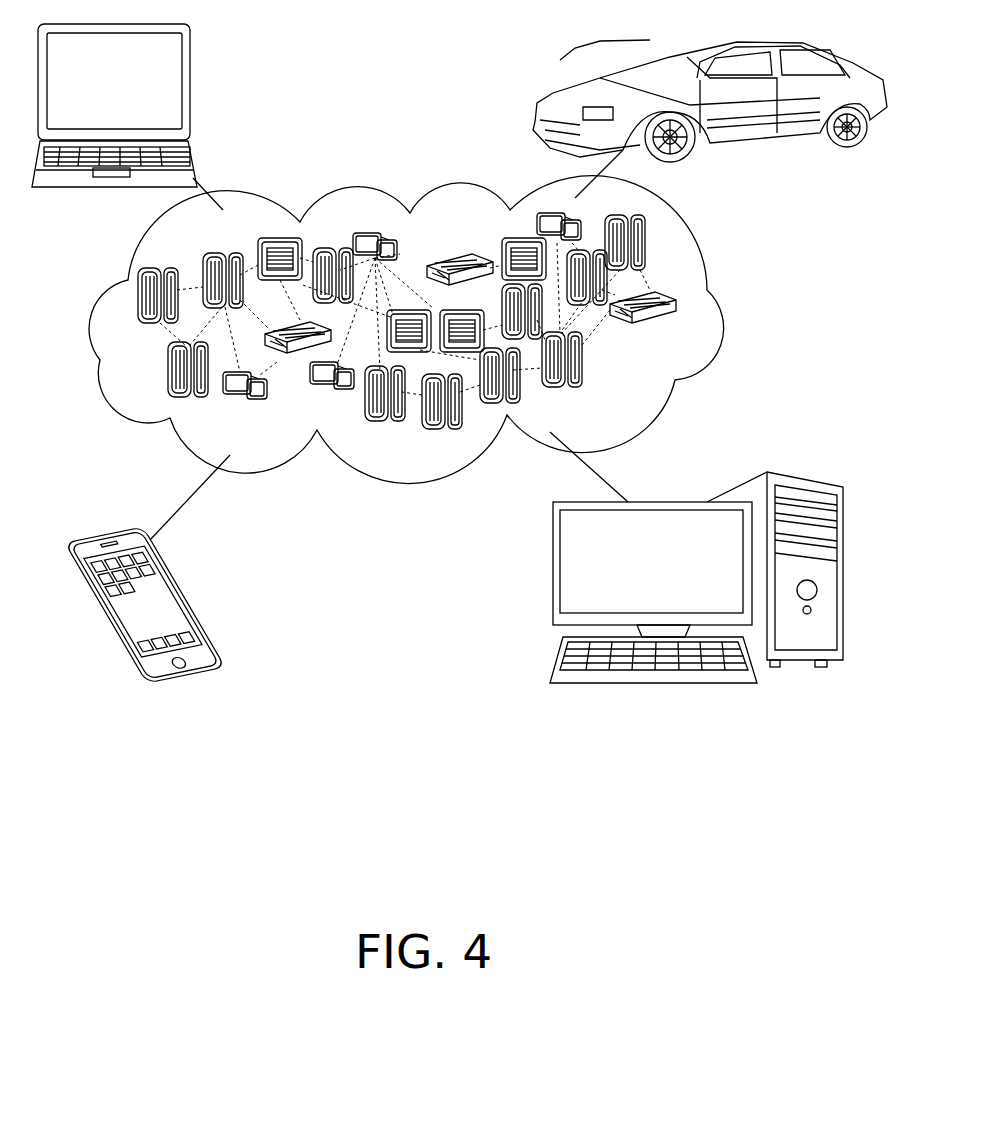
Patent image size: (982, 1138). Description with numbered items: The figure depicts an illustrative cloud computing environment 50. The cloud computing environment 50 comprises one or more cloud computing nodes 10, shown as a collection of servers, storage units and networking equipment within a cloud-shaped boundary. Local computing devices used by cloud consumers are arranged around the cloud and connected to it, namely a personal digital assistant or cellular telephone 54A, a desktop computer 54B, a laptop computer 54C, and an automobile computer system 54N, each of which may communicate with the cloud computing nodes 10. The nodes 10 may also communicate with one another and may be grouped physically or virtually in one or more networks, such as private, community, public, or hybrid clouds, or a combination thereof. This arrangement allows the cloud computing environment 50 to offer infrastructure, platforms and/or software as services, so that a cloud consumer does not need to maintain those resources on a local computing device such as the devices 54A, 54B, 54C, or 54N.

The cloud computing node 10 is at (676, 321).
The cloud computing environment 50 is at (722, 310).
The personal digital assistant or cellular telephone 54A is at (165, 593).
The desktop computer 54B is at (740, 485).
The laptop computer 54C is at (170, 98).
The automobile computer system 54N is at (537, 109).